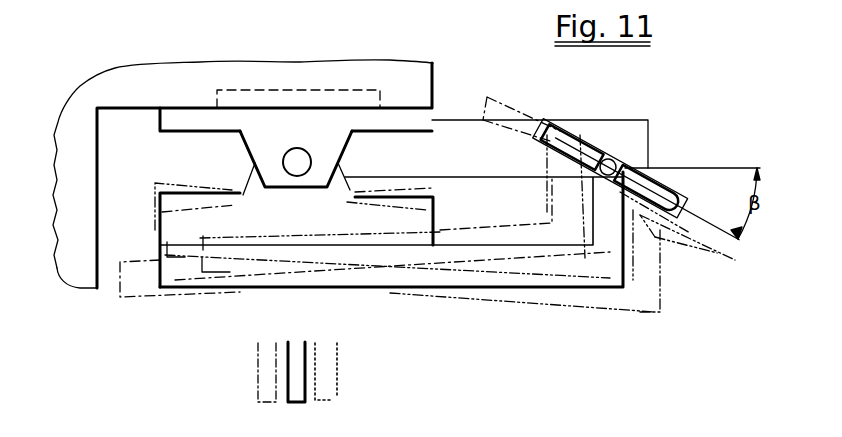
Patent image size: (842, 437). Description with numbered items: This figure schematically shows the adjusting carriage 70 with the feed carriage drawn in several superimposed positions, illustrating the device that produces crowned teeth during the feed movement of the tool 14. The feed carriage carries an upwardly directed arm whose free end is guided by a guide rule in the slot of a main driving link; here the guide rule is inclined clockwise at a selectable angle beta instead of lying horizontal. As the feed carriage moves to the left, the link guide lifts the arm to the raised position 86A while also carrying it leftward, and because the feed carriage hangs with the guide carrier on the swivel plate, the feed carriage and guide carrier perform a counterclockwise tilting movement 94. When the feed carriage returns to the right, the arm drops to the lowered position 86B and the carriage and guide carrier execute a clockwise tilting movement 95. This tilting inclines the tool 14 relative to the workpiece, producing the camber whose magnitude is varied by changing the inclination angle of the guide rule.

The adjusting carriage 70 is at (642, 110).
The lifted position of the arm 86A is at (556, 119).
The lowered position of the arm 86B is at (700, 268).
The tool 14 is at (345, 377).
The counterclockwise tilting movement 94 is at (688, 290).
The clockwise tilting movement 95 is at (700, 293).